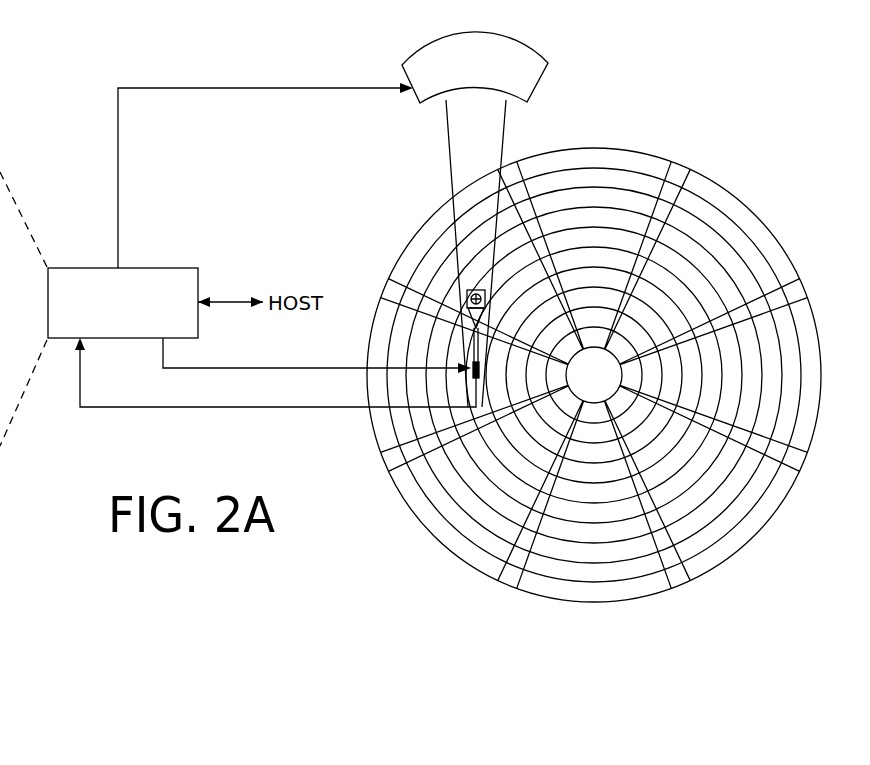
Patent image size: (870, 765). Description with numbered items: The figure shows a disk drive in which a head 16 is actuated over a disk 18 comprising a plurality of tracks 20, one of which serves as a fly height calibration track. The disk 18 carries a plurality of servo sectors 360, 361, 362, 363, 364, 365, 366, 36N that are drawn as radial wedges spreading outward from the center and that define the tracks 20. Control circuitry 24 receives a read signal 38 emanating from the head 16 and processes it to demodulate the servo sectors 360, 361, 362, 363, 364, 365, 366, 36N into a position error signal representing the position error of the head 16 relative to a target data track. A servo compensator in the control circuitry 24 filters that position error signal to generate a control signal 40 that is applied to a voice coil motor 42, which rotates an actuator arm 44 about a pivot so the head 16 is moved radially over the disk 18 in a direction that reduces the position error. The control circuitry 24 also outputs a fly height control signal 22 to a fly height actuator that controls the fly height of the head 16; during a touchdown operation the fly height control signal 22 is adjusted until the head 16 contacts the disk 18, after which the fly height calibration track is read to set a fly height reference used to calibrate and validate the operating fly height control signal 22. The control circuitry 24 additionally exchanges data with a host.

The head 16 is at (486, 369).
The disk 18 is at (594, 369).
The tracks 20 is at (592, 178).
The fly height control signal 22 is at (345, 368).
The control circuitry 24 is at (163, 268).
The read signal 38 is at (252, 408).
The control signal 40 is at (118, 166).
The voice coil motor 42 is at (414, 96).
The actuator arm 44 is at (456, 178).
The servo sector 360 is at (683, 170).
The servo sector 361 is at (800, 293).
The servo sector 362 is at (798, 462).
The servo sector 363 is at (673, 578).
The servo sector 364 is at (500, 577).
The servo sector 365 is at (387, 462).
The servo sector 366 is at (392, 283).
The servo sector 36N is at (517, 170).